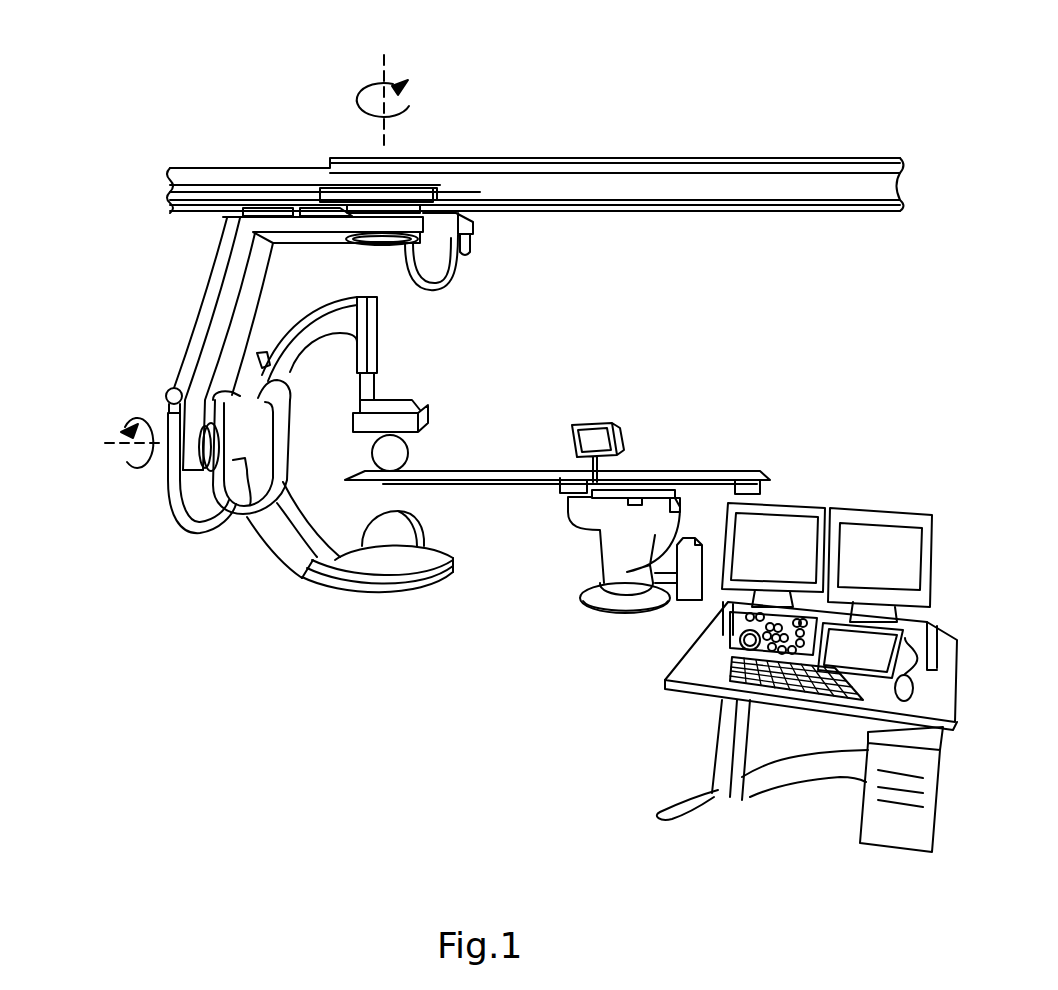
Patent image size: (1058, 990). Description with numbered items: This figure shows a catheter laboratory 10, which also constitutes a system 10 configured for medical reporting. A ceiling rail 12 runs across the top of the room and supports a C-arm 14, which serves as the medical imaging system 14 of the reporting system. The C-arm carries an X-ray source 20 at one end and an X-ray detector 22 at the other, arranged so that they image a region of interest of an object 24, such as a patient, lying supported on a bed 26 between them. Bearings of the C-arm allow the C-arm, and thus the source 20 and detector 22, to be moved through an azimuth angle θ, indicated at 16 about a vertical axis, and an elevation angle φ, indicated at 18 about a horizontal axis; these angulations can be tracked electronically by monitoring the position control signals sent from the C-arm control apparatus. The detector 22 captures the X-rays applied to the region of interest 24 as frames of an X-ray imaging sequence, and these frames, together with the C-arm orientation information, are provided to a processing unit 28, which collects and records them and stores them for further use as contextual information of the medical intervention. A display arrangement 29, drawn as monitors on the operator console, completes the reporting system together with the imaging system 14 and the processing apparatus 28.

The catheter laboratory 10 is at (757, 132).
The ceiling rail 12 is at (922, 181).
The C-arm 14 is at (184, 284).
The vertical rotation axis (theta) 16 is at (332, 58).
The horizontal rotation axis (phi) / pivot 18 is at (119, 505).
The X-ray source 20 is at (428, 612).
The X-ray detector 22 is at (452, 400).
The object 24 is at (405, 457).
The bed 26 is at (516, 510).
The processing unit 28 is at (906, 840).
The display arrangement 29 is at (785, 523).